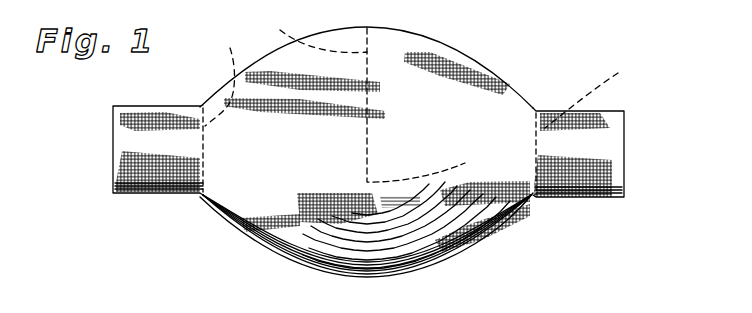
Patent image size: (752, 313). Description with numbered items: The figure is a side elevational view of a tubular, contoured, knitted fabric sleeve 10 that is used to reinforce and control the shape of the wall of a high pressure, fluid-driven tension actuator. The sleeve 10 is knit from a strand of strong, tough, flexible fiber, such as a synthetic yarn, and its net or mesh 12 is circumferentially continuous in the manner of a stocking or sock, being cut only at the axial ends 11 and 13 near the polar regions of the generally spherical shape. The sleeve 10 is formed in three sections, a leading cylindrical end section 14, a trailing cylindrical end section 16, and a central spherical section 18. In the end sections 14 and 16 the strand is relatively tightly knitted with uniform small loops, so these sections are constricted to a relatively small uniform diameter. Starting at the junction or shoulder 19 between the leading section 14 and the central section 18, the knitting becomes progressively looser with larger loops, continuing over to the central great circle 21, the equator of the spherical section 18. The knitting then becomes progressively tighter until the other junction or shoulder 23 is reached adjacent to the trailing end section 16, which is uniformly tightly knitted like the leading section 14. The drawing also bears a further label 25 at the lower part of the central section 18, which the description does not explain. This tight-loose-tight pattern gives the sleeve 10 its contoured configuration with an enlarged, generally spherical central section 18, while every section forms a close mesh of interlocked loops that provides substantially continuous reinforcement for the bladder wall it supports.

The tubular contoured knitted fabric sleeve 10 is at (492, 48).
The axial end 11 is at (113, 128).
The net or mesh 12 is at (480, 100).
The axial end 13 is at (625, 145).
The leading cylindrical end section 14 is at (205, 220).
The trailing cylindrical end section 16 is at (620, 224).
The central spherical section 18 is at (217, 279).
The junction or shoulder 19 is at (219, 80).
The central great circle 21 is at (308, 32).
The junction or shoulder 23 is at (594, 94).
The bottom wall layers 25 is at (400, 310).